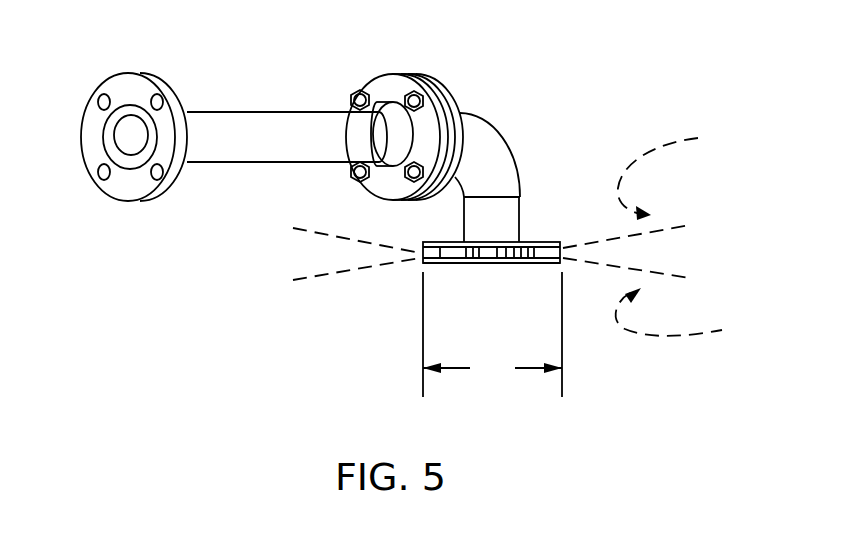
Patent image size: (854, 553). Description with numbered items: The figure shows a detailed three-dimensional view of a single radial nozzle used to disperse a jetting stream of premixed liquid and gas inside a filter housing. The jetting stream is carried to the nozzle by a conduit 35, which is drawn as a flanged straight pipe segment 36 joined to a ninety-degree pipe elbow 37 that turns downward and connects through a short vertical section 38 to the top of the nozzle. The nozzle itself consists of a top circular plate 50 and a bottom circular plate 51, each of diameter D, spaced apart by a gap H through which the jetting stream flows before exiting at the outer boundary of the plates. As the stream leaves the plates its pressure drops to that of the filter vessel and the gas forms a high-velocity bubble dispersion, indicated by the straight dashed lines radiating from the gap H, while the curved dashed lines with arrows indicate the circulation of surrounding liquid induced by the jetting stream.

The conduit 35 is at (95, 95).
The pipe 36 is at (258, 111).
The elbow 37 is at (493, 133).
The nozzle stem 38 is at (523, 207).
The top circular plate 50 is at (545, 240).
The bottom circular plate 51 is at (448, 265).
The gap H is at (420, 252).
The diameter D is at (492, 334).